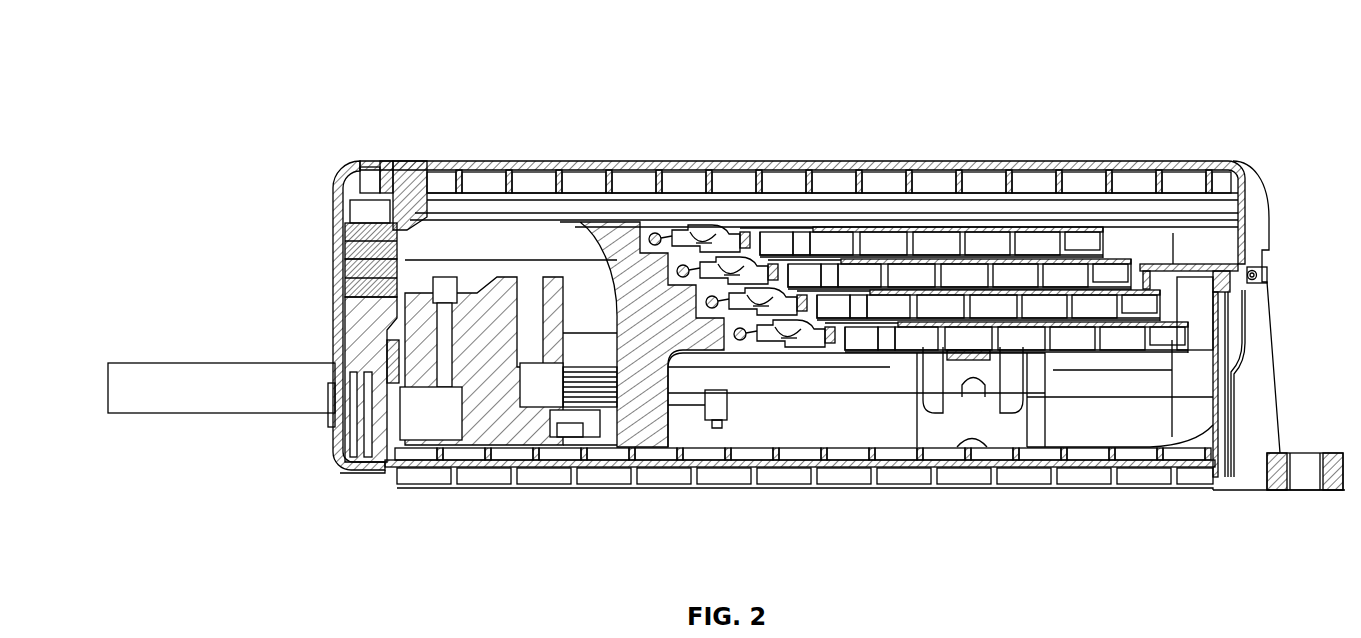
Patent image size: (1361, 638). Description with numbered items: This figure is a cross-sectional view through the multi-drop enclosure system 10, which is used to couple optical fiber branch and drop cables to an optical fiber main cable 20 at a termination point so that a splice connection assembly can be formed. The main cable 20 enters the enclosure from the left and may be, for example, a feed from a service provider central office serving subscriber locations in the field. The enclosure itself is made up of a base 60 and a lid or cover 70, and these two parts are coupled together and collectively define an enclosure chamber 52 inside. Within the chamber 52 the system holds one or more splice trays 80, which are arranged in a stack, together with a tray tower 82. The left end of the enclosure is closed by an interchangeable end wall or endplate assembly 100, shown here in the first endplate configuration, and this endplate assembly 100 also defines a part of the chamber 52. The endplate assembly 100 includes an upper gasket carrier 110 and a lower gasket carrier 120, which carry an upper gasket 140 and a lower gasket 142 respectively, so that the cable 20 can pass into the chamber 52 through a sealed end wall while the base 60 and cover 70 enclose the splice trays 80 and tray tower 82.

The multi-drop enclosure system 10 is at (262, 68).
The optical fiber main cable 20 is at (183, 375).
The enclosure chamber 52 is at (790, 421).
The base 60 is at (845, 470).
The cover 70 is at (830, 165).
The splice tray 80 is at (928, 245).
The tray tower 82 is at (638, 428).
The endplate assembly 100 is at (237, 192).
The upper gasket carrier 110 is at (350, 197).
The lower gasket carrier 120 is at (350, 310).
The upper gasket 140 is at (353, 232).
The lower gasket 142 is at (353, 268).